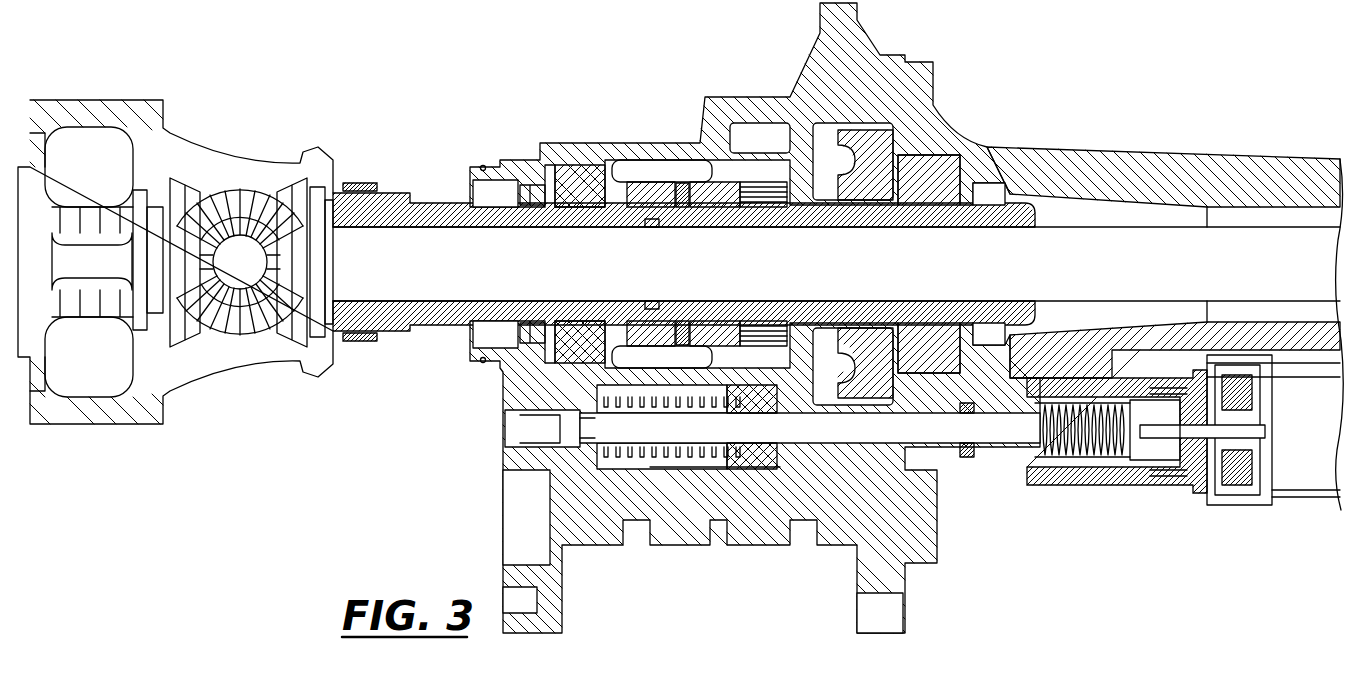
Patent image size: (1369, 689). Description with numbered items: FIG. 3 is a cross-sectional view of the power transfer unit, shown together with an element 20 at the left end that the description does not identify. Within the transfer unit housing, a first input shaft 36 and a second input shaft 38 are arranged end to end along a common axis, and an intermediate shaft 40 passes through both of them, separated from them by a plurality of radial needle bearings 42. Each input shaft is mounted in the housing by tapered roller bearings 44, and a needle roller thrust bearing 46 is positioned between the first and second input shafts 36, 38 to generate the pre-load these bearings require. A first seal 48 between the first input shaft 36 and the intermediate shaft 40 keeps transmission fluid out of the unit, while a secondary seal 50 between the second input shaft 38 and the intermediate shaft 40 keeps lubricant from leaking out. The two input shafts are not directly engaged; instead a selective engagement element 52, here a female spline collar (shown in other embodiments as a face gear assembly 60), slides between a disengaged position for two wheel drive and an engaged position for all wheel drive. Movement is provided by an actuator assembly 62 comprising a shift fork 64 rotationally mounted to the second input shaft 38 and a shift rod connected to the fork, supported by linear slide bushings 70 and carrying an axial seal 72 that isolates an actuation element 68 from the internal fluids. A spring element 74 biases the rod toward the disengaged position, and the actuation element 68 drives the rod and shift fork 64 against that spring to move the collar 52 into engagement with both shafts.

The constant velocity joint 20 is at (245, 97).
The first input shaft 36 is at (442, 207).
The second input shaft 38 is at (1018, 206).
The intermediate shaft 40 is at (948, 279).
The radial needle bearings 42 is at (593, 228).
The tapered roller bearings 44 is at (575, 177).
The needle roller thrust bearing 46 is at (680, 228).
The first seal 48 is at (652, 228).
The secondary seal 50 is at (1003, 228).
The selective engagement element 52 is at (683, 167).
The face gear assembly 60 is at (862, 441).
The actuator assembly 62 is at (788, 398).
The shift fork 64 is at (757, 467).
The actuation element 68 is at (1295, 443).
The linear slide bushings 70 is at (583, 447).
The axial seal 72 is at (973, 458).
The spring element 74 is at (662, 457).